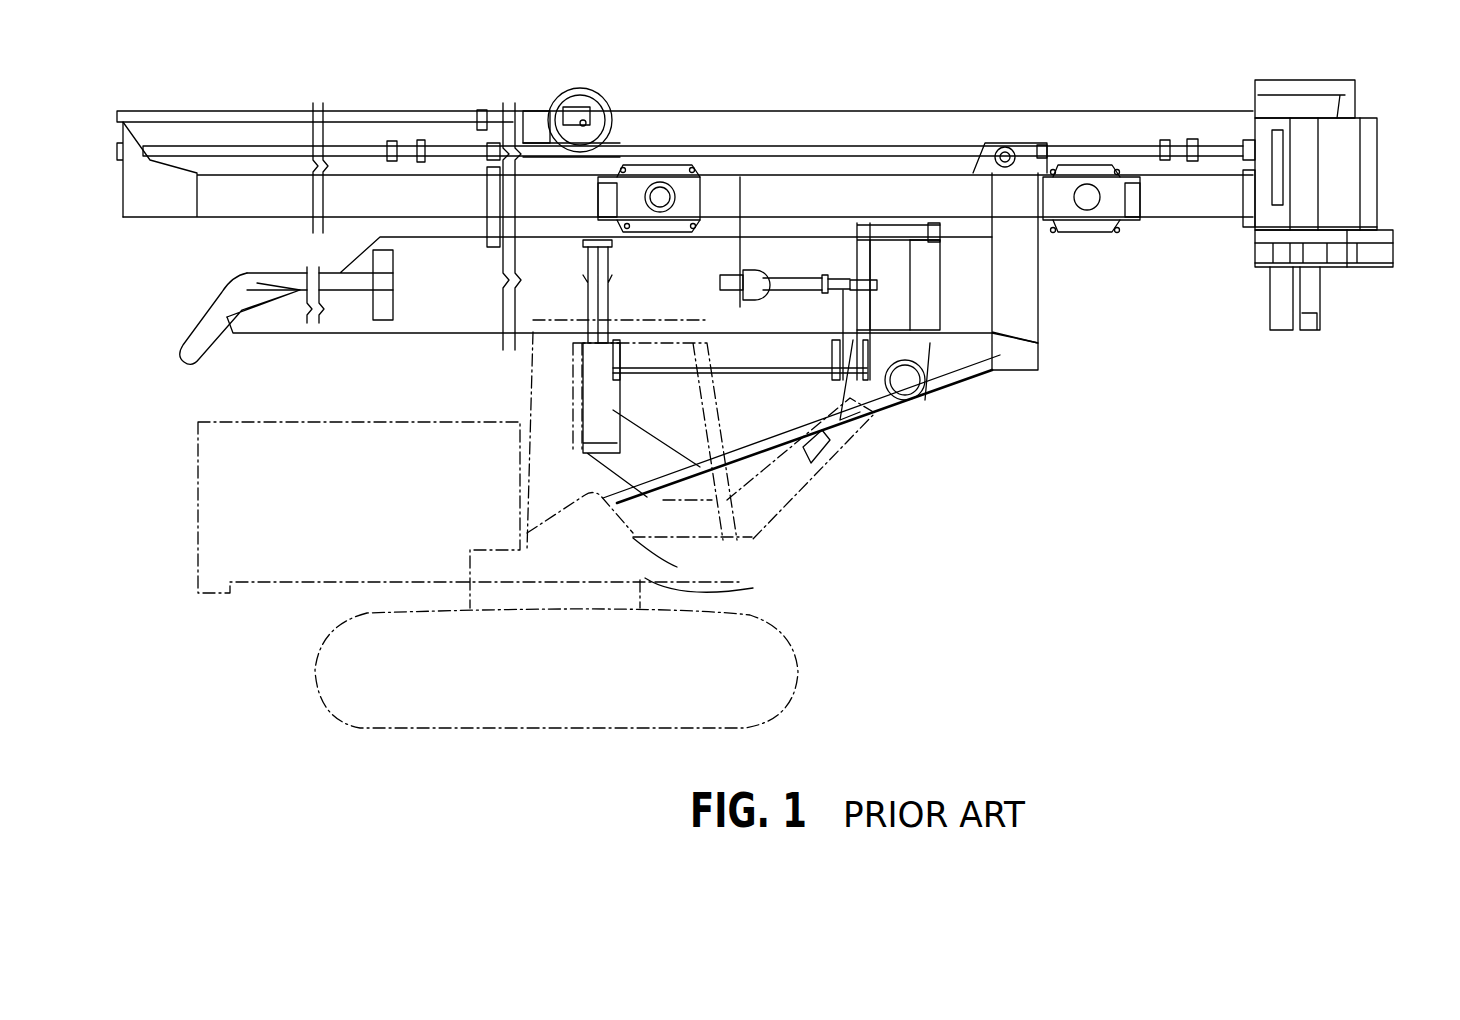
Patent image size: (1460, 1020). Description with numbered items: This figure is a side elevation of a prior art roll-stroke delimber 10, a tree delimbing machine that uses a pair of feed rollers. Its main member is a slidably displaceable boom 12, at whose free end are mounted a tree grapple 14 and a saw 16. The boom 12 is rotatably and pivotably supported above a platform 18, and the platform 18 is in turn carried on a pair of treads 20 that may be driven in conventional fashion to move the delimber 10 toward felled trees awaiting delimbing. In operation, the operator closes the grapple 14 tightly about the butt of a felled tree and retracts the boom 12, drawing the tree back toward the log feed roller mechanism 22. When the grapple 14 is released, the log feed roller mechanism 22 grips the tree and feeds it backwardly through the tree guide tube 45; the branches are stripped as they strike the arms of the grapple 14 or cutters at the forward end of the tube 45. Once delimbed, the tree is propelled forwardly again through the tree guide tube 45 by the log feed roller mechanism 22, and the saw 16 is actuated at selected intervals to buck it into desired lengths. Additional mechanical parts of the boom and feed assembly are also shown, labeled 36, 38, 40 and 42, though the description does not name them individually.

The roll-stroke delimber 10 is at (1092, 88).
The boom 12 is at (1188, 210).
The tree grapple 14 is at (1280, 303).
The saw 16 is at (1368, 178).
The platform 18 is at (754, 502).
The treads 20 is at (797, 658).
The log feed roller mechanism 22 is at (953, 305).
The pivot bracket 36 is at (917, 378).
The mounting plate 38 is at (913, 227).
The gate member 40 is at (885, 253).
The pivot rod 42 is at (793, 277).
The tree guide tube 45 is at (773, 337).